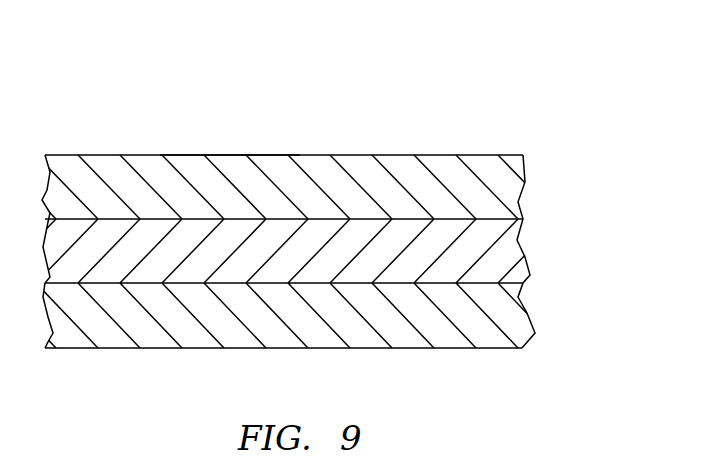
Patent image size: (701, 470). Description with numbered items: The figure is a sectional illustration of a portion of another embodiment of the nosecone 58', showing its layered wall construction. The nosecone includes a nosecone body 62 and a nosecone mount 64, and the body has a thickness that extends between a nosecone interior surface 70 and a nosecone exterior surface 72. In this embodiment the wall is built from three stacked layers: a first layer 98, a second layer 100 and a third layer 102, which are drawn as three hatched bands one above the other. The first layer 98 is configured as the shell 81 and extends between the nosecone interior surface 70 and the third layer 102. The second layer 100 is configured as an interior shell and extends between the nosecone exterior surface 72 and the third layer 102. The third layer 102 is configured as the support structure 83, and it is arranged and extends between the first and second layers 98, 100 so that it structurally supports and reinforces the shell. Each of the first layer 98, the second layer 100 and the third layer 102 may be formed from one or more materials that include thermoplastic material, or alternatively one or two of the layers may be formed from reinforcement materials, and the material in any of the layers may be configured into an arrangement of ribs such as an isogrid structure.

The nosecone 58' is at (297, 194).
The nosecone exterior surface 72 is at (70, 155).
The nosecone interior surface 70 is at (73, 349).
The nosecone body 62 is at (230, 111).
The nosecone mount 64 is at (232, 144).
The shell 81 is at (513, 163).
The support structure 83 is at (517, 233).
The second layer 100 is at (540, 183).
The third layer 102 is at (540, 258).
The first layer 98 is at (540, 315).